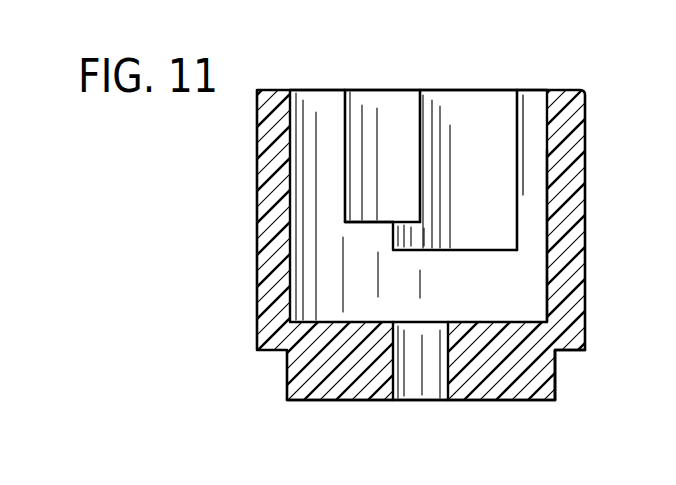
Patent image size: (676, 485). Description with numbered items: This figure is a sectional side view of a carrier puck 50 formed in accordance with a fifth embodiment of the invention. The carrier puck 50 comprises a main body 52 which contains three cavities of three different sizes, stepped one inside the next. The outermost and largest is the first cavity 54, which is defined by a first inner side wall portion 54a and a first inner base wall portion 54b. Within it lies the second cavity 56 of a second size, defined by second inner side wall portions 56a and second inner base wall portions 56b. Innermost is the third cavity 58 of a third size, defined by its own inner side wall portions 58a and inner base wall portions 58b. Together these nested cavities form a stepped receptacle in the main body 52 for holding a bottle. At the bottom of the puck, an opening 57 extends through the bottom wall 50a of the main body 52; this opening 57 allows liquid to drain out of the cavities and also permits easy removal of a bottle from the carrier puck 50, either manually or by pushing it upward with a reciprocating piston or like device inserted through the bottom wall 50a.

The carrier puck 50 is at (586, 108).
The bottom wall 50a is at (548, 374).
The main body 52 is at (512, 378).
The first cavity 54 is at (548, 216).
The first inner side wall portion 54a is at (550, 272).
The first inner base wall portion 54b is at (523, 322).
The second cavity 56 is at (517, 104).
The second inner side wall portions 56a is at (517, 142).
The second inner base wall portions 56b is at (496, 248).
The opening 57 is at (446, 364).
The third cavity 58 is at (358, 140).
The inner side wall portions of third cavity 58a is at (408, 138).
The inner base wall portions of third cavity 58b is at (372, 222).